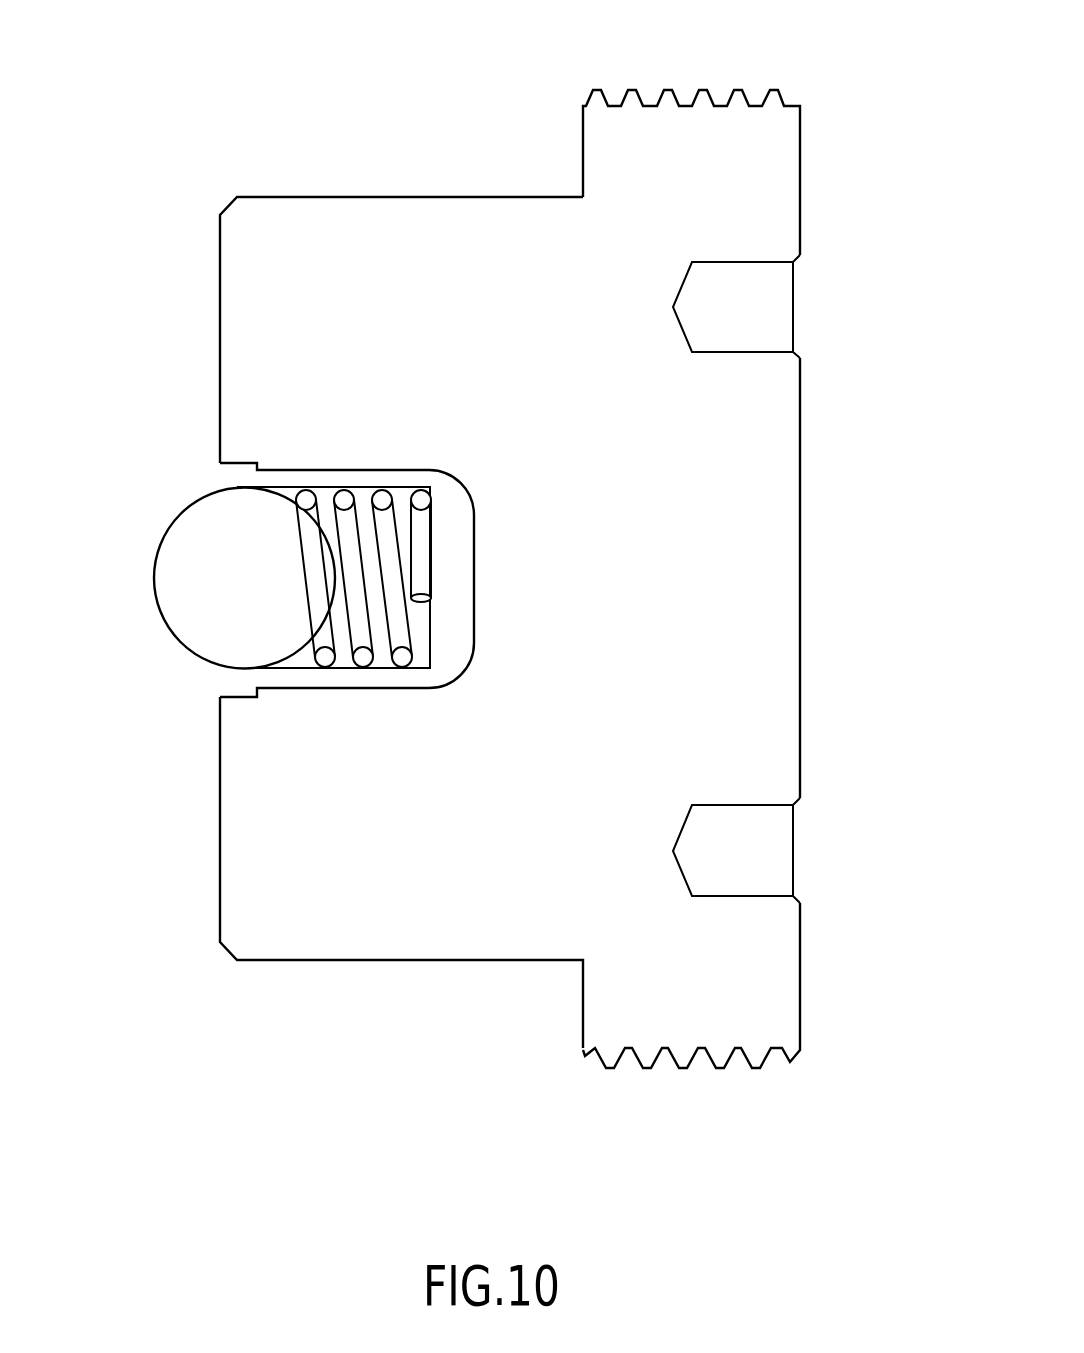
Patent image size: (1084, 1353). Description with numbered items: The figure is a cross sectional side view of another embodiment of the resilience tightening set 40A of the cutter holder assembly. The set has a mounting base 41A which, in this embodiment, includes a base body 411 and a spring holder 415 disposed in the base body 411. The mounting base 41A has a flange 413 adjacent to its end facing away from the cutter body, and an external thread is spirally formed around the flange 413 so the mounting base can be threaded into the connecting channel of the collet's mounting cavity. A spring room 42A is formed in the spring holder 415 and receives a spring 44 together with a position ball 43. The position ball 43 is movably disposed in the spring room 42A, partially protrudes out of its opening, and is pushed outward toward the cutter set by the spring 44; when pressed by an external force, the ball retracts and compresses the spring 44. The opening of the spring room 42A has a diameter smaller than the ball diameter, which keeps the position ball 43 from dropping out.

The resilience tightening set 40A is at (500, 534).
The mounting base 41A is at (573, 579).
The base body 411 is at (437, 935).
The flange 413 is at (758, 141).
The spring holder 415 is at (405, 636).
The spring room 42A is at (372, 668).
The position ball 43 is at (200, 578).
The spring 44 is at (383, 500).